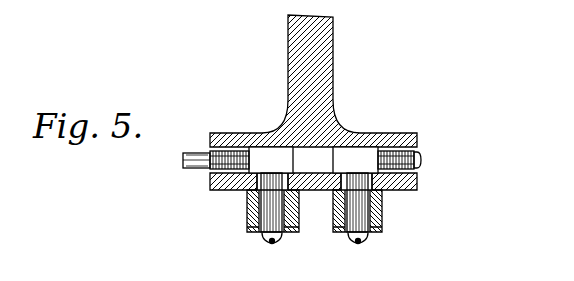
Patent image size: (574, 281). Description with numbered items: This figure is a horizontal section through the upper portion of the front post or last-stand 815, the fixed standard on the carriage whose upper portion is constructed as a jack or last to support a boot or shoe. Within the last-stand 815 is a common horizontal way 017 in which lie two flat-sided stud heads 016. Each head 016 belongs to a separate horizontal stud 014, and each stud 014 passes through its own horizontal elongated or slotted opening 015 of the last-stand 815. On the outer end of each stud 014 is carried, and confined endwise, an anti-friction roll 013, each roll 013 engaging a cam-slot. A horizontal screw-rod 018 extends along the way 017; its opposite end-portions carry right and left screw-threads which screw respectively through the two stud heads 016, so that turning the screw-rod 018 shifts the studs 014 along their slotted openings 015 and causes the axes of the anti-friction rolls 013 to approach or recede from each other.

The front post (last-stand) 815 is at (313, 102).
The stud head 016 is at (313, 160).
The horizontal way 017 is at (212, 151).
The screw-rod 018 is at (439, 168).
The anti-friction roll 013 is at (255, 211).
The horizontal stud 014 is at (283, 211).
The slotted opening 015 is at (306, 187).